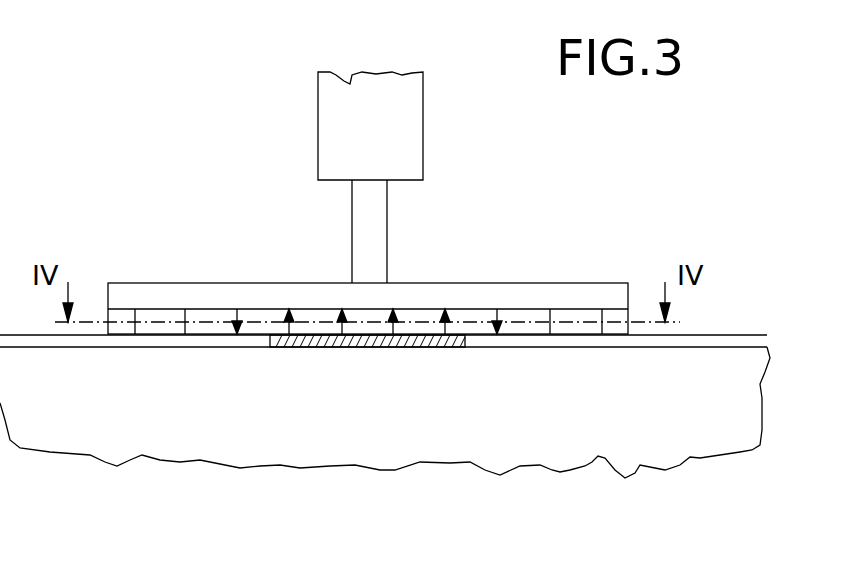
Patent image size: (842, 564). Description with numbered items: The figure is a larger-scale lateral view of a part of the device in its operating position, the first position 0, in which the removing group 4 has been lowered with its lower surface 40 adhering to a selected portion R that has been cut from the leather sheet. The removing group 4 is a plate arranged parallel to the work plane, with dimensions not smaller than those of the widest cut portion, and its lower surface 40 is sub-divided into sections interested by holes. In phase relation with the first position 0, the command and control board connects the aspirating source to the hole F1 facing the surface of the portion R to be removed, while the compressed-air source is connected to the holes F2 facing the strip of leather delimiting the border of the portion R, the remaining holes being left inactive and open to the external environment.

The first position 0 is at (110, 184).
The removing group 4 is at (608, 297).
The hole facing the portion F1 is at (403, 312).
The holes facing the strip F2 is at (513, 316).
The portion R is at (320, 348).
The lower surface 40 is at (483, 348).